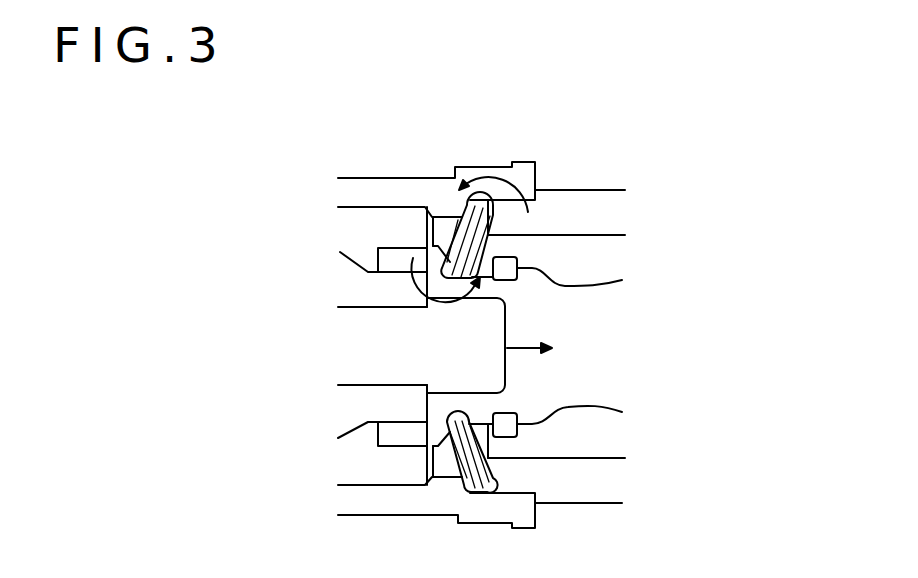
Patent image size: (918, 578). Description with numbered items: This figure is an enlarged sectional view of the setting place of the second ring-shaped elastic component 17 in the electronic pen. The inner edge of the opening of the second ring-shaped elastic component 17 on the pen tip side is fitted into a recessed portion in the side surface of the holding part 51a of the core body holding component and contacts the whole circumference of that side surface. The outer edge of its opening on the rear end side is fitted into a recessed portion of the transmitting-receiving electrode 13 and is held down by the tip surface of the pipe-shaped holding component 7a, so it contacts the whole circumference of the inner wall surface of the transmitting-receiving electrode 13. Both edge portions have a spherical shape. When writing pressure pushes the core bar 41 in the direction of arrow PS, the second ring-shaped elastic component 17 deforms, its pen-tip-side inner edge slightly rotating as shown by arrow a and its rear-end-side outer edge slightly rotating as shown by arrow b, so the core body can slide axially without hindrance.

The transmitting-receiving electrode 13 is at (370, 188).
The second ring-shaped elastic component 17 is at (462, 247).
The pipe-shaped holding component 7a is at (583, 203).
The core bar 41 is at (348, 343).
The holding part 51a is at (406, 432).
The arrow a is at (427, 302).
The arrow b is at (494, 170).
The arrow PS is at (547, 353).